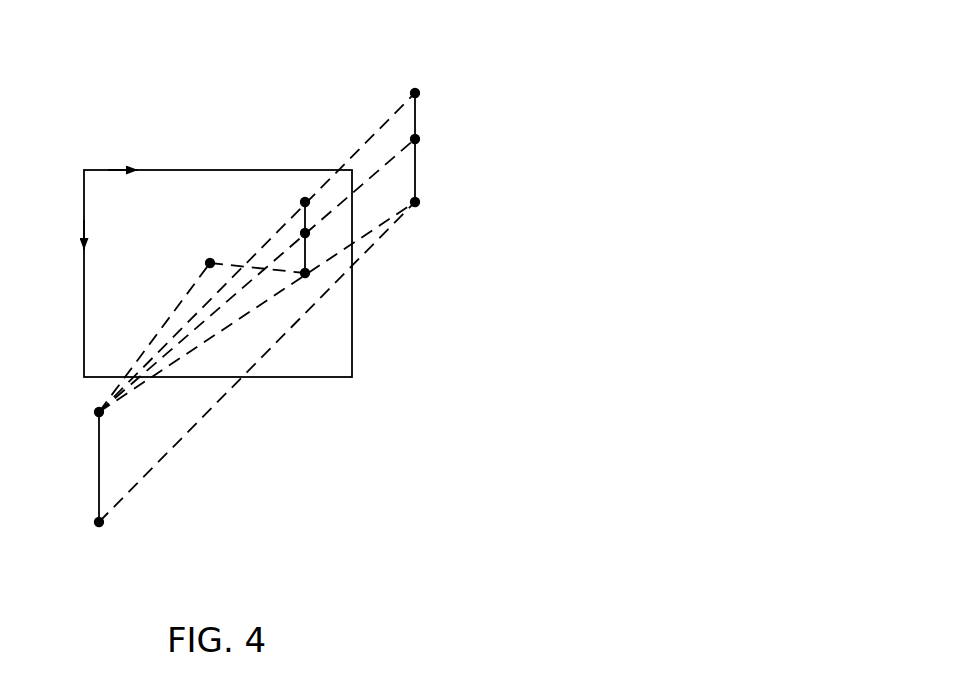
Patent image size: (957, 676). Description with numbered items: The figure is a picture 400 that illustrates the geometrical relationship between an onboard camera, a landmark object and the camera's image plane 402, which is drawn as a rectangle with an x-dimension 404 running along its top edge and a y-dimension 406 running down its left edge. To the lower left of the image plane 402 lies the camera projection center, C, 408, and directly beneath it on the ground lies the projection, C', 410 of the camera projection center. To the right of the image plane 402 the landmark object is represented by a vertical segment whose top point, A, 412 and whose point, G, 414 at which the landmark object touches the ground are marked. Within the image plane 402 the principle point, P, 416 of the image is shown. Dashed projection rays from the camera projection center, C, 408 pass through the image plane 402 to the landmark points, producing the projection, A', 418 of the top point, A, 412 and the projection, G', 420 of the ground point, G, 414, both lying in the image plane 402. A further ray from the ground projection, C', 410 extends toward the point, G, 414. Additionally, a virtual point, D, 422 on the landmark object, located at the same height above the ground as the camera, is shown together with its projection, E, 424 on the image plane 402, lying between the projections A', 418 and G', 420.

The picture 400 is at (600, 44).
The image plane 402 is at (242, 168).
The x-dimension 404 is at (89, 166).
The y-dimension 406 is at (82, 203).
The camera projection center C 408 is at (93, 419).
The projection C' of the camera projection center 410 is at (102, 529).
The top point A of the landmark object 412 is at (413, 86).
The point G at which the landmark object touches the ground 414 is at (421, 209).
The principle point P of the image 416 is at (203, 266).
The projection A' of the top point 418 is at (304, 194).
The projection G' of the ground point 420 is at (314, 273).
The virtual point D on the landmark object 422 is at (424, 144).
The projection E of the virtual point 424 is at (297, 233).